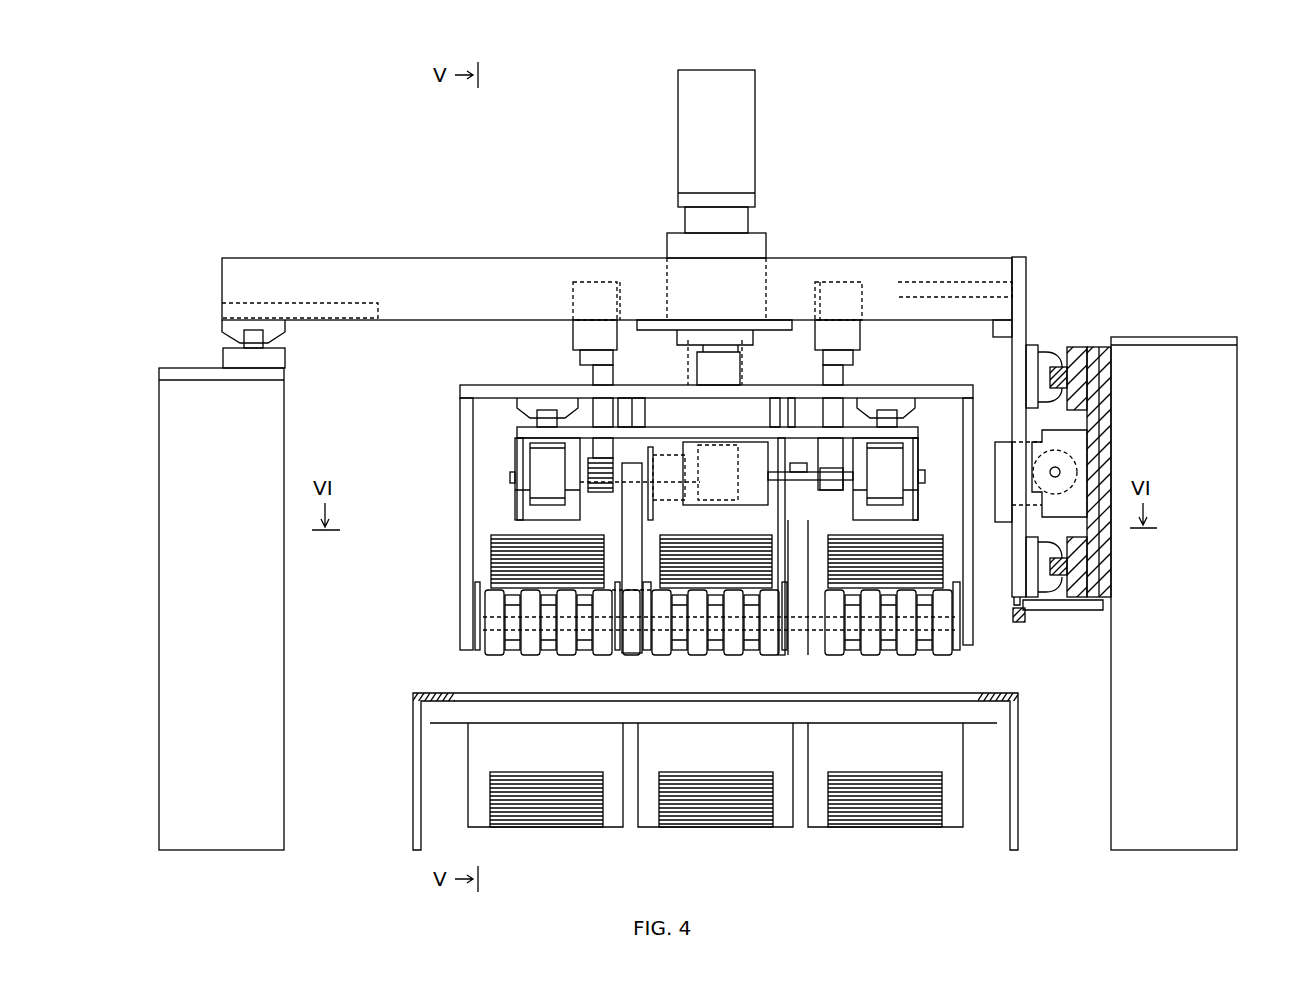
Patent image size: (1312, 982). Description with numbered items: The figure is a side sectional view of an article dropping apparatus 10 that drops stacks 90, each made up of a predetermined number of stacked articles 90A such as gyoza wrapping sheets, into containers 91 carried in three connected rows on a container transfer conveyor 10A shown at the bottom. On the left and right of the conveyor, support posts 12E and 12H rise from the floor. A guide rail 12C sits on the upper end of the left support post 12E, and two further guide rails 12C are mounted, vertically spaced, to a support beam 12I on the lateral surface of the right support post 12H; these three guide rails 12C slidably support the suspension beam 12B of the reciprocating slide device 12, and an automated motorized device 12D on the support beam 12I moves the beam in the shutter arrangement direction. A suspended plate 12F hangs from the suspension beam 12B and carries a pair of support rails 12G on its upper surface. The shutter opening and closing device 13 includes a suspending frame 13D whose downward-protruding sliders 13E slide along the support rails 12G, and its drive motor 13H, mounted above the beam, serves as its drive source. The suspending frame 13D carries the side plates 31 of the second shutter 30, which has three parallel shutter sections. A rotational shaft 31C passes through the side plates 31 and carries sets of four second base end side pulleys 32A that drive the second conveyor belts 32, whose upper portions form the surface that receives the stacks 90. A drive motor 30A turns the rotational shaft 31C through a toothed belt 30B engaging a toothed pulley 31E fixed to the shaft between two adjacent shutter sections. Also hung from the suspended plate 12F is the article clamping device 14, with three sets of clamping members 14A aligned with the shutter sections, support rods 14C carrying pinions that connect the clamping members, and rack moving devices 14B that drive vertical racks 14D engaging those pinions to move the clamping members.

The article dropping apparatus 10 is at (963, 103).
The container transfer conveyor 10A is at (413, 762).
The reciprocating slide device 12 is at (1039, 268).
The suspension beam 12B is at (283, 277).
The guide rail 12C is at (253, 335).
The automated motorized device 12D is at (1090, 455).
The support post 12E is at (180, 537).
The suspended plate 12F is at (523, 433).
The support rail 12G is at (547, 418).
The support post 12H is at (1215, 610).
The support beam 12I is at (1098, 377).
The shutter opening and closing device 13 is at (773, 228).
The suspending frame 13D is at (467, 412).
The slider 13E is at (530, 410).
The drive motor 13H is at (740, 110).
The article clamping device 14 is at (588, 505).
The clamping member 14A is at (545, 507).
The rack moving device 14B is at (597, 330).
The support rod 14C is at (925, 477).
The vertical rack 14D is at (876, 350).
The second shutter 30 is at (915, 655).
The drive motor 30A is at (675, 468).
The toothed belt 30B is at (630, 468).
The side plate 31 is at (480, 605).
The rotational shaft 31C is at (945, 625).
The toothed pulley 31E is at (630, 640).
The second conveyor belt 32 is at (563, 610).
The second base end side pulley 32A is at (483, 645).
The stack 90 is at (480, 544).
The stacked article 90A is at (495, 578).
The container 91 is at (648, 830).